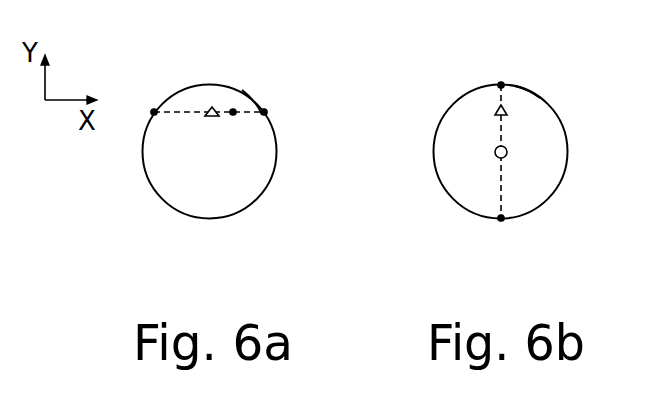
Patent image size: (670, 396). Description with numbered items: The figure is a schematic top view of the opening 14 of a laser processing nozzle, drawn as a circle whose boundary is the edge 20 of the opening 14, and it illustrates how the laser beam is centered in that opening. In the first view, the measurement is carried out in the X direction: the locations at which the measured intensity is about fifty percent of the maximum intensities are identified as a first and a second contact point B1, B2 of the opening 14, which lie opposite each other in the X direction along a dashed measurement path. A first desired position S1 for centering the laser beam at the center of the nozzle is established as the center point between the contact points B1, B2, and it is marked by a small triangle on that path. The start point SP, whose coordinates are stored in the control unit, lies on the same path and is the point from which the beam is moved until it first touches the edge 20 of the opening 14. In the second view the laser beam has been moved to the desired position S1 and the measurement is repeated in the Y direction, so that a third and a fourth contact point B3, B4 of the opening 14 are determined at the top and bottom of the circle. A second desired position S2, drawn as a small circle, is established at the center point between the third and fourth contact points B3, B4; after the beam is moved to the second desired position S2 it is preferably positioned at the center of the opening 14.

In FIG. 6A, the opening 14 is at (250, 173).
In FIG. 6B, the opening 14 is at (542, 173).
In FIG. 6A, the edge 20 is at (252, 102).
In FIG. 6B, the edge 20 is at (528, 87).
In FIG. 6A, the first contact point B1 is at (135, 109).
In FIG. 6A, the second contact point B2 is at (284, 109).
In FIG. 6B, the third contact point B3 is at (501, 70).
In FIG. 6B, the fourth contact point B4 is at (501, 237).
In FIG. 6A, the start point SP is at (233, 109).
In FIG. 6A, the first desired position S1 is at (212, 106).
In FIG. 6B, the second desired position S2 is at (495, 152).